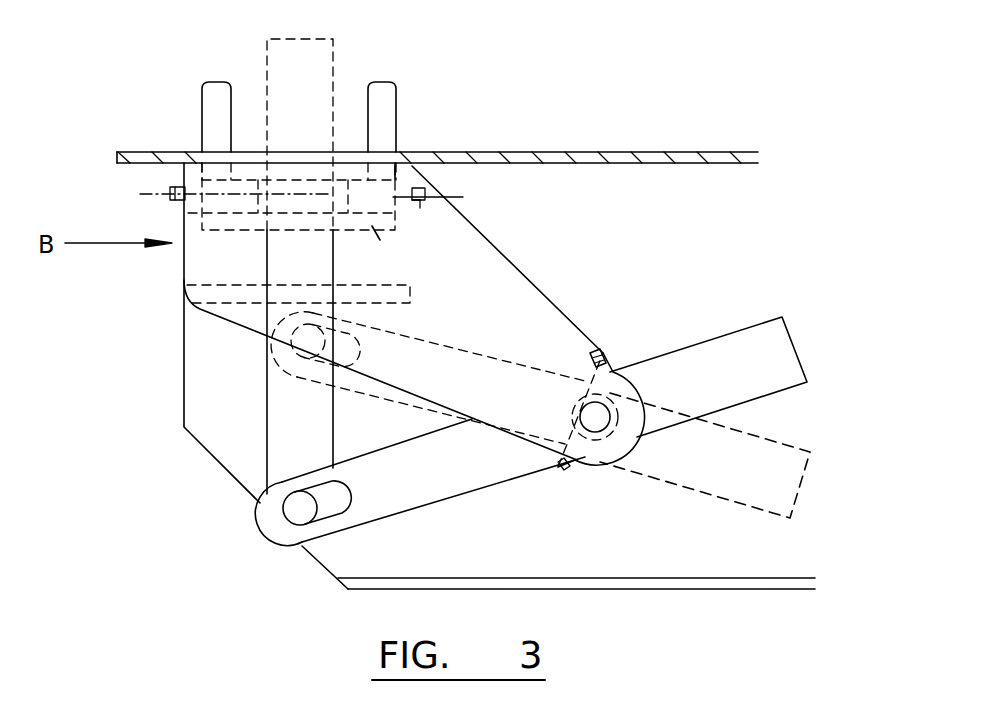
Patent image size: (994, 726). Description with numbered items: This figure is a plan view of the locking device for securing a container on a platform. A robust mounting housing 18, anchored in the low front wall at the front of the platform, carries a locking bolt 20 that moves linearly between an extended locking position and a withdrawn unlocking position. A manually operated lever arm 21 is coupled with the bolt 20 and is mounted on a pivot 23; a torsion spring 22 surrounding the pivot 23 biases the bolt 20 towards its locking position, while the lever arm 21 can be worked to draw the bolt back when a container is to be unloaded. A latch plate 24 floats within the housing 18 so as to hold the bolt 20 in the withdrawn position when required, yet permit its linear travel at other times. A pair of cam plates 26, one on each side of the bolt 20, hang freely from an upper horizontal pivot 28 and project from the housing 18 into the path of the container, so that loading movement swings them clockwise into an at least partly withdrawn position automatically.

The mounting housing 18 is at (495, 240).
The locking bolt 20 is at (290, 400).
The lever arm 21 is at (470, 458).
The torsion spring 22 is at (607, 352).
The pivot 23 is at (598, 425).
The latch plate 24 is at (377, 232).
The cam plates 26 is at (215, 110).
The upper horizontal pivot 28 is at (452, 195).